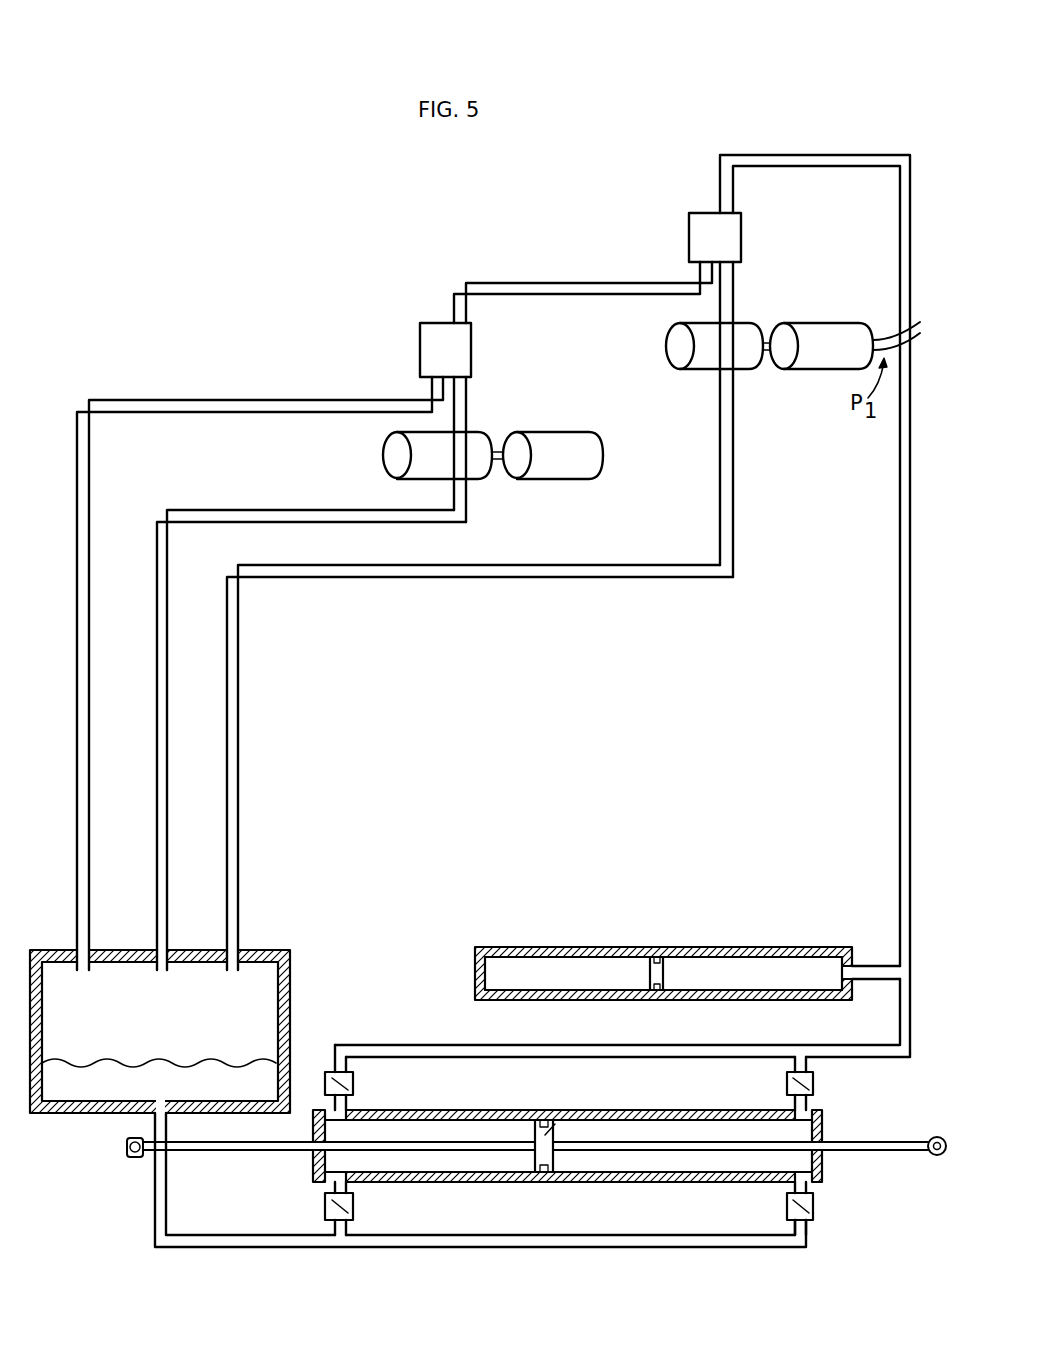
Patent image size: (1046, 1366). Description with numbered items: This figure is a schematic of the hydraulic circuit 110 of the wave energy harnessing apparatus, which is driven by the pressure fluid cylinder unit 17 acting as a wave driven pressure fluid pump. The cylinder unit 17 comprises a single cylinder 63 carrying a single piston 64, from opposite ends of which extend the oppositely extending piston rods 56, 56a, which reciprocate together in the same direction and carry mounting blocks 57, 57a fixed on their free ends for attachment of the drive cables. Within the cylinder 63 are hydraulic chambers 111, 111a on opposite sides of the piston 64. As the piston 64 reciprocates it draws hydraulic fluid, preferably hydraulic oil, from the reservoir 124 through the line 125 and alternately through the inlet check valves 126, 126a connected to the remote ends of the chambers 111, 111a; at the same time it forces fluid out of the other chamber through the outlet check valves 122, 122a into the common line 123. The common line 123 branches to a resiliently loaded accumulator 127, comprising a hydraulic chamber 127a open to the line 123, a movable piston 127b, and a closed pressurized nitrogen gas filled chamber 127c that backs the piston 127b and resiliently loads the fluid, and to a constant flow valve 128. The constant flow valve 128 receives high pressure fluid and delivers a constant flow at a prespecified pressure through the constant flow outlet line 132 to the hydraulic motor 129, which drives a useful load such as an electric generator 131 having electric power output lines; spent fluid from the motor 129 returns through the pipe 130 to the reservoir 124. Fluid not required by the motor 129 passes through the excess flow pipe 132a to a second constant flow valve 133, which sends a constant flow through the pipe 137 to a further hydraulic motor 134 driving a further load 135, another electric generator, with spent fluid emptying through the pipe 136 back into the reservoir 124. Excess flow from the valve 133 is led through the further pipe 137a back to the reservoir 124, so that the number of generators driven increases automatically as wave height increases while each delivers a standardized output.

The hydraulic circuit 110 is at (835, 122).
The pressure fluid cylinder unit 17 is at (573, 1183).
The piston rod 56 is at (238, 1149).
The piston rod 56a is at (887, 1142).
The mounting block 57 is at (127, 1146).
The mounting block 57a is at (938, 1137).
The cylinder 63 is at (503, 1112).
The piston 64 is at (556, 1122).
The hydraulic chamber 111 is at (415, 1128).
The hydraulic chamber 111a is at (645, 1128).
The outlet check valve 122 is at (353, 1085).
The outlet check valve 122a is at (813, 1084).
The common line 123 is at (900, 1018).
The reservoir 124 is at (217, 1078).
The line 125 is at (157, 1203).
The inlet check valve 126 is at (353, 1209).
The inlet check valve 126a is at (813, 1209).
The resiliently loaded accumulator 127 is at (625, 950).
The hydraulic chamber 127a is at (808, 985).
The movable piston 127b is at (653, 978).
The pressurized nitrogen gas filled chamber 127c is at (540, 985).
The constant flow valve 128 is at (689, 236).
The hydraulic motor 129 is at (690, 338).
The pipe 130 is at (495, 568).
The generator 131 is at (805, 330).
The constant flow outlet line 132 is at (735, 283).
The excess flow pipe 132a is at (634, 286).
The second constant flow valve 133 is at (420, 340).
The further hydraulic motor 134 is at (393, 458).
The further load 135 is at (532, 432).
The pipe 136 is at (462, 502).
The pipe 137 is at (462, 390).
The further pipe 137a is at (265, 407).